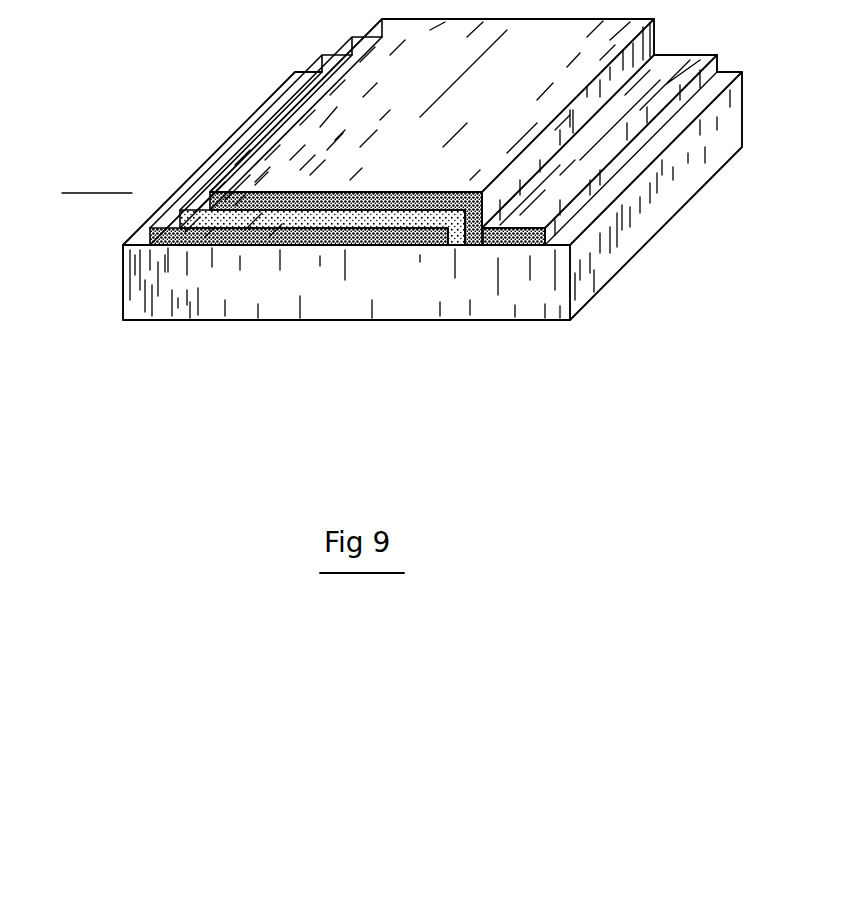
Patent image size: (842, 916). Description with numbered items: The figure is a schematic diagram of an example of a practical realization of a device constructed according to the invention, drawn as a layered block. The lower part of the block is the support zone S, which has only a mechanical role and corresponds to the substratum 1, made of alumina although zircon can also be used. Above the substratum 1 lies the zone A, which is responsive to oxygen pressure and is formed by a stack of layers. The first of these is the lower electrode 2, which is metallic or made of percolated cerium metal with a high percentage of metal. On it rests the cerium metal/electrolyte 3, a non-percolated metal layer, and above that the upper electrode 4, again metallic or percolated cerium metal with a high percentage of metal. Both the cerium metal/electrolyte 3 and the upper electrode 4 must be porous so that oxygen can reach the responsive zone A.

The substratum 1 is at (294, 217).
The lower electrode 2 is at (322, 208).
The cerium metal/electrolyte 3 is at (432, 199).
The upper electrode 4 is at (553, 217).
The zone responsive to oxygen pressure A is at (113, 246).
The support zone S is at (118, 321).